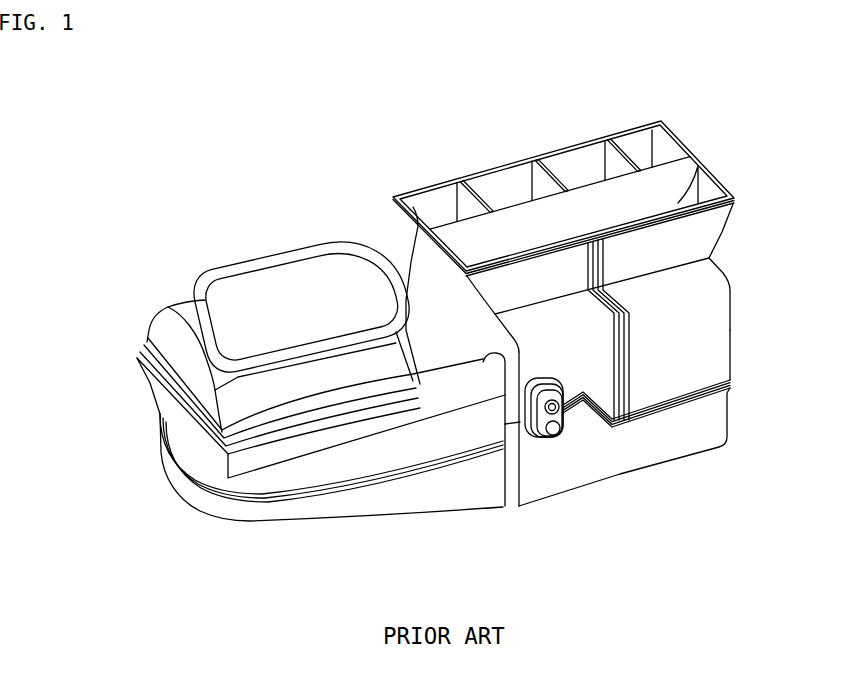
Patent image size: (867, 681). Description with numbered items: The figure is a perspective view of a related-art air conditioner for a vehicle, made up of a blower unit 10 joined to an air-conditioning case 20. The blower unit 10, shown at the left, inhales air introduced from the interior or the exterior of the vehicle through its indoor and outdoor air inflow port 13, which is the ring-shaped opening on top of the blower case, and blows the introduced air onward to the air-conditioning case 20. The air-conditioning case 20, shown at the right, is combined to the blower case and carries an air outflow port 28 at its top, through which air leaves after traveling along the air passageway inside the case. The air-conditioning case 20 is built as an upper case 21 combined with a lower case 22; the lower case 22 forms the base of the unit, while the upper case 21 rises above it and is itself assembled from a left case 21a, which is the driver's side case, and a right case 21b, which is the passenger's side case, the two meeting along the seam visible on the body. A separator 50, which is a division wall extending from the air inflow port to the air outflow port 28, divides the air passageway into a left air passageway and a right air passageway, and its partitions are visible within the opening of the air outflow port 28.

The blower unit 10 is at (152, 397).
The indoor and outdoor air inflow port 13 is at (366, 250).
The air-conditioning case 20 is at (719, 233).
The upper case 21 is at (803, 316).
The left case 21a is at (707, 362).
The right case 21b is at (594, 360).
The lower case 22 is at (592, 462).
The air outflow port 28 is at (693, 163).
The separator 50 is at (543, 162).